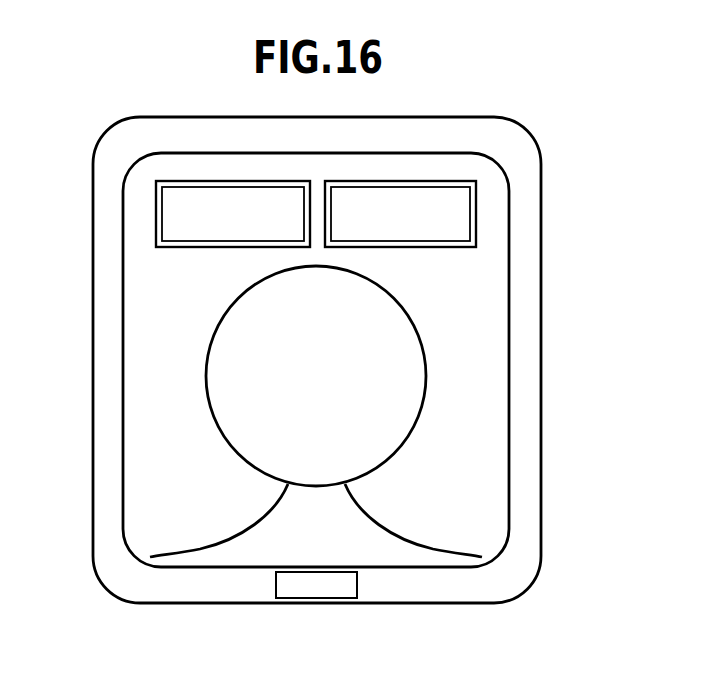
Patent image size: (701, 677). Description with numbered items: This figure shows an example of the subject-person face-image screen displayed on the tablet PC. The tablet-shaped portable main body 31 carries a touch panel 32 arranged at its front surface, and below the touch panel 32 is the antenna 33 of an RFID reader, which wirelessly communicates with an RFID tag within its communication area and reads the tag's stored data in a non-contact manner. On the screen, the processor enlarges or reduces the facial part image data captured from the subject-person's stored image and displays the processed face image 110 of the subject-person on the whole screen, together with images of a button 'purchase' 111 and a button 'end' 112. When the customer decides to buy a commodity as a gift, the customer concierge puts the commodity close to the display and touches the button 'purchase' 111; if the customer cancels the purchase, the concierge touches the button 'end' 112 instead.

The tablet-shaped portable main body 31 is at (541, 286).
The touch panel 32 is at (122, 358).
The antenna 33 is at (316, 596).
The face image 110 is at (424, 347).
The button 'purchase' 111 is at (156, 213).
The button 'end' 112 is at (476, 212).